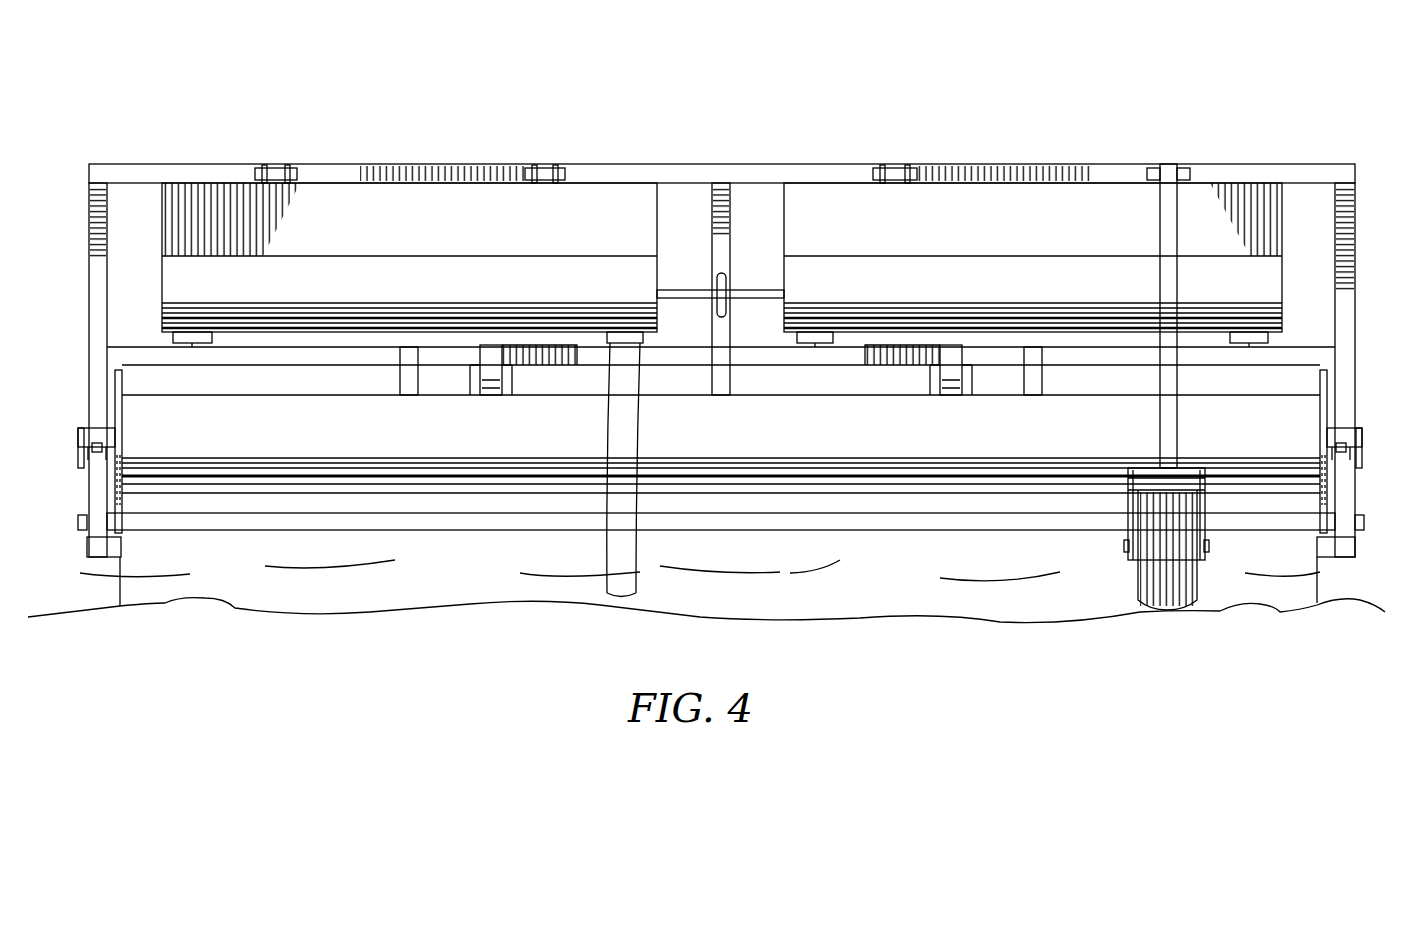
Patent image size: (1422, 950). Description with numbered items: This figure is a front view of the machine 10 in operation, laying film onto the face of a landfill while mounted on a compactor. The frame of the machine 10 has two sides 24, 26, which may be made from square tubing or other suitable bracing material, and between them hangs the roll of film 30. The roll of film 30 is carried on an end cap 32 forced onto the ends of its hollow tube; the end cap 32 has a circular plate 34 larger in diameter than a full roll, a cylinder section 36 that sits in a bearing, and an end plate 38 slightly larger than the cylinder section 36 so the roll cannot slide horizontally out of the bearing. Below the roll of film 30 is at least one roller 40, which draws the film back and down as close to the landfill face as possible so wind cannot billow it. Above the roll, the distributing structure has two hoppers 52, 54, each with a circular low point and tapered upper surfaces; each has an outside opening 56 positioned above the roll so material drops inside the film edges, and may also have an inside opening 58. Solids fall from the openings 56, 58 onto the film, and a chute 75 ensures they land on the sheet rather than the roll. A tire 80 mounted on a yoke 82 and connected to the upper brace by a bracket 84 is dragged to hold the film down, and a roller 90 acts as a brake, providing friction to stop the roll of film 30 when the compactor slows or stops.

The machine 10 is at (723, 122).
The side 24 is at (88, 385).
The side 26 is at (1357, 385).
The roll of film 30 is at (738, 449).
The end cap 32 is at (105, 412).
The circular plate 34 is at (115, 492).
The cylinder section 36 is at (88, 439).
The end plate 38 is at (80, 460).
The roller 40 is at (845, 532).
The hopper 52 is at (314, 200).
The hopper 54 is at (825, 198).
The outside opening 56 is at (195, 345).
The inside opening 58 is at (618, 345).
The chute 75 is at (610, 430).
The tire 80 is at (1140, 588).
The yoke 82 is at (1136, 468).
The bracket 84 is at (905, 165).
The roller 90 is at (490, 396).